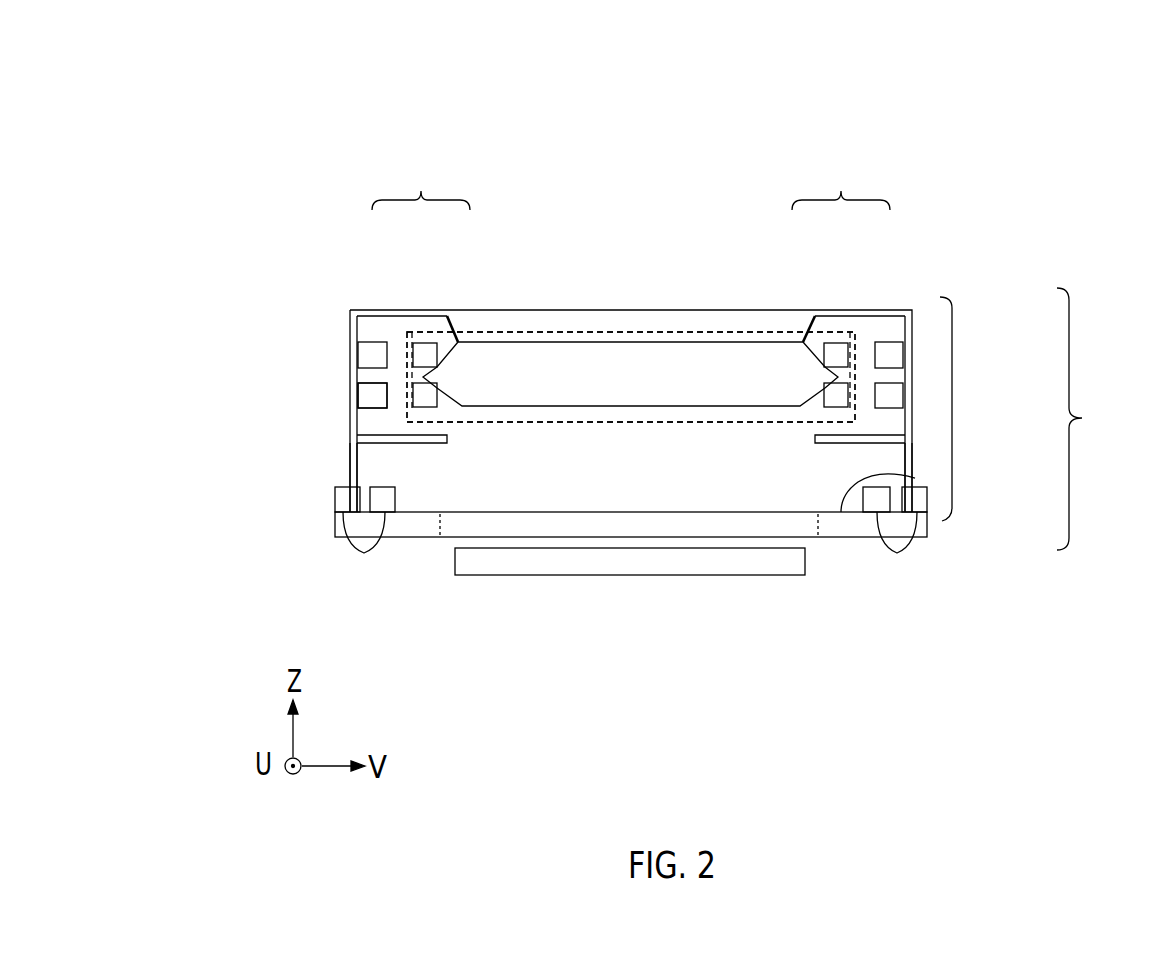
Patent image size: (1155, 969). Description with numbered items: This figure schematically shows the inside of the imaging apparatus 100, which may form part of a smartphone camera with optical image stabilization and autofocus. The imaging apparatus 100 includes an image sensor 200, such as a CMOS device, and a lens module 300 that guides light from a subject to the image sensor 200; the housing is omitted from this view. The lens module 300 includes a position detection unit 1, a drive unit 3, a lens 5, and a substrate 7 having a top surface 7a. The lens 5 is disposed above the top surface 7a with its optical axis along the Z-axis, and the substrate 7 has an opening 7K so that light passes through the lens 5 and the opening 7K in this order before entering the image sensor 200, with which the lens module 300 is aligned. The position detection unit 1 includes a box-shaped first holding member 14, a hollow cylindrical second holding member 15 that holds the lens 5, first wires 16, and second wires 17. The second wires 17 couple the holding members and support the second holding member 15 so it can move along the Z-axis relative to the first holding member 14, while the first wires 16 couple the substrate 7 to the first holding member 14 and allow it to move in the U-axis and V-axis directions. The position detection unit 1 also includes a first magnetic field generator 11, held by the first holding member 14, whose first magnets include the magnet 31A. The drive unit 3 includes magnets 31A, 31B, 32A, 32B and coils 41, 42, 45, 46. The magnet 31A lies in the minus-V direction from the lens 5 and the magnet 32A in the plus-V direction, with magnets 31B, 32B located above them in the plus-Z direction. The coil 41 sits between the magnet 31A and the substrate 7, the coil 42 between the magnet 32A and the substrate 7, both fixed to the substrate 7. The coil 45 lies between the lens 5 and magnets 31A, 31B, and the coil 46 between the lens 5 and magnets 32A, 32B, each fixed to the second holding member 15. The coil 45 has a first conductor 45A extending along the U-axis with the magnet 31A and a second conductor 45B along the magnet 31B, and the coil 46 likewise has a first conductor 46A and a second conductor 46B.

The imaging apparatus 100 is at (628, 142).
The lens module 300 is at (1100, 419).
The image sensor 200 is at (628, 565).
The position detection unit 1 is at (963, 414).
The drive unit 3 is at (631, 377).
The lens 5 is at (628, 318).
The substrate 7 is at (928, 524).
The top surface 7a is at (915, 478).
The opening 7K is at (812, 525).
The first magnetic field generator 11 is at (290, 396).
The first holding member 14 is at (356, 310).
The second holding member 15 is at (513, 318).
The first wires 16 is at (350, 470).
The second wires 17 is at (472, 318).
The magnet 31A is at (350, 398).
The magnet 31B is at (350, 355).
The magnet 32A is at (912, 400).
The magnet 32B is at (912, 358).
The coil 41 is at (362, 553).
The coil 42 is at (897, 553).
The coil 45 is at (421, 280).
The first conductor 45A is at (418, 343).
The second conductor 45B is at (411, 383).
The coil 46 is at (841, 280).
The second conductor 46B is at (836, 343).
The first conductor 46A is at (851, 383).